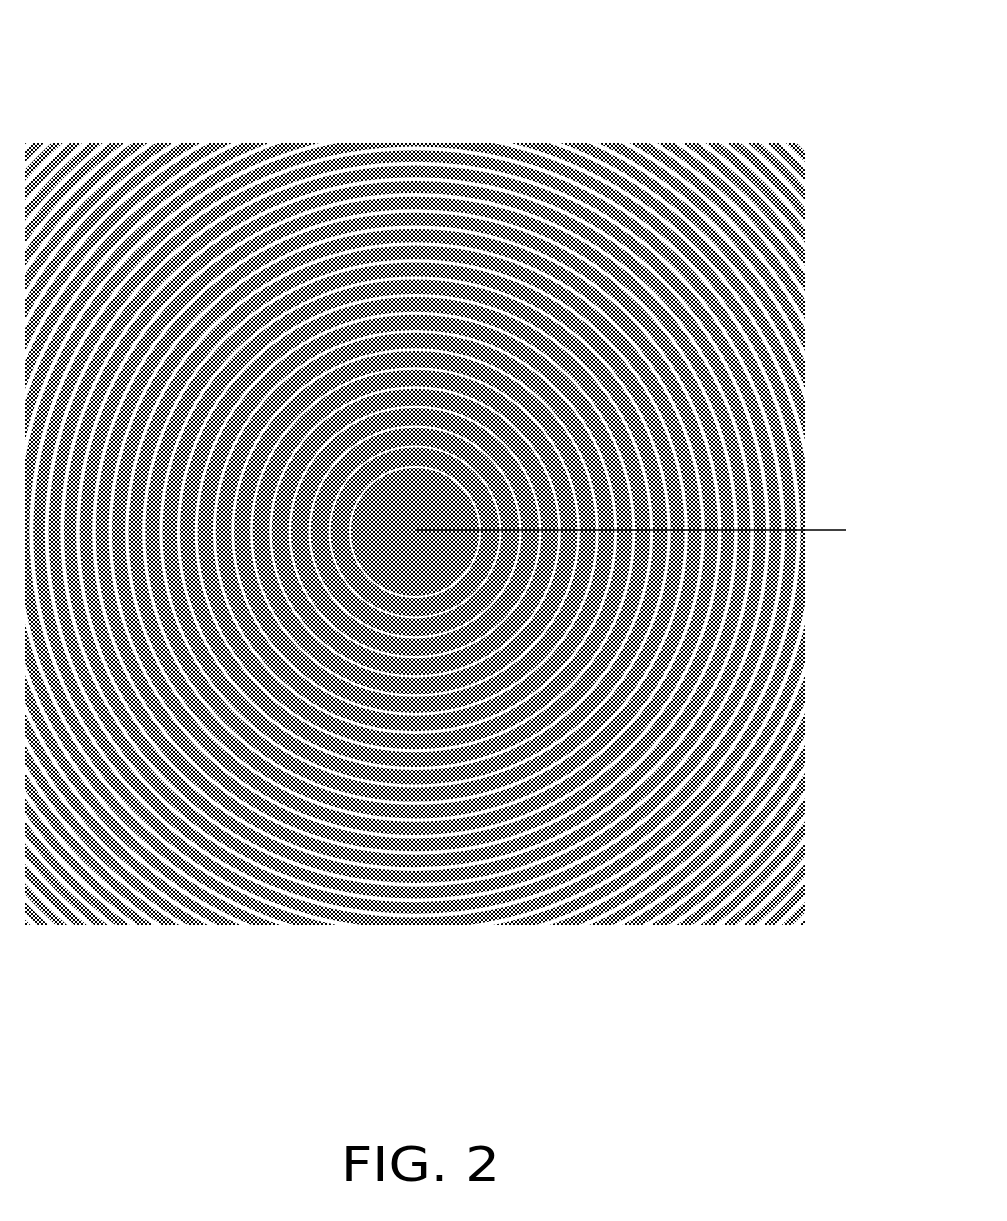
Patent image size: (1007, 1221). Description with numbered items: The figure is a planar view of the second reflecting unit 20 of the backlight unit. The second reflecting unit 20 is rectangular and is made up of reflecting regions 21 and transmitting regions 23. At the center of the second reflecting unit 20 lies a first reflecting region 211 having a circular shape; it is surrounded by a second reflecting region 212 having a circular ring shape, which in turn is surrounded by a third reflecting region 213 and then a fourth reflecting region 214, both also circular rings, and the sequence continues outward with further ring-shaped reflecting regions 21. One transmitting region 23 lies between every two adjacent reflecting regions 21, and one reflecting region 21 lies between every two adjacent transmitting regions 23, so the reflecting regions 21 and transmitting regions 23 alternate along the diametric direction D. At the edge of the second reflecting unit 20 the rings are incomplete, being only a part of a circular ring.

The second reflecting unit 20 is at (491, 550).
The reflecting regions 21 is at (797, 687).
The transmitting regions 23 is at (793, 741).
The first reflecting region 211 is at (428, 494).
The second reflecting region 212 is at (463, 500).
The third reflecting region 213 is at (478, 548).
The fourth reflecting region 214 is at (490, 577).
The diametric direction D is at (630, 513).